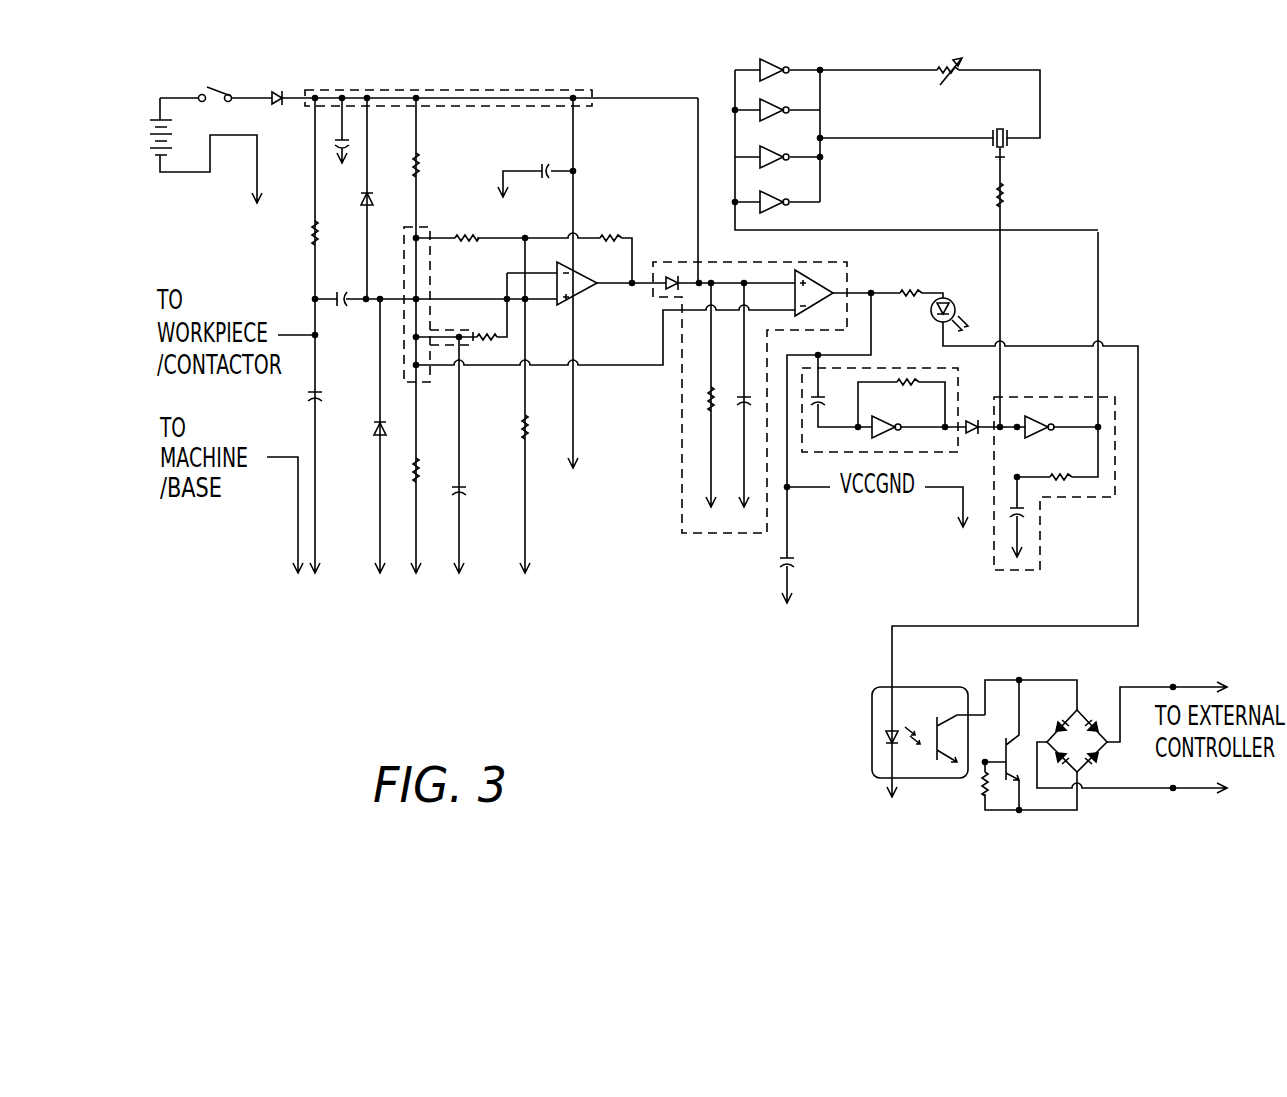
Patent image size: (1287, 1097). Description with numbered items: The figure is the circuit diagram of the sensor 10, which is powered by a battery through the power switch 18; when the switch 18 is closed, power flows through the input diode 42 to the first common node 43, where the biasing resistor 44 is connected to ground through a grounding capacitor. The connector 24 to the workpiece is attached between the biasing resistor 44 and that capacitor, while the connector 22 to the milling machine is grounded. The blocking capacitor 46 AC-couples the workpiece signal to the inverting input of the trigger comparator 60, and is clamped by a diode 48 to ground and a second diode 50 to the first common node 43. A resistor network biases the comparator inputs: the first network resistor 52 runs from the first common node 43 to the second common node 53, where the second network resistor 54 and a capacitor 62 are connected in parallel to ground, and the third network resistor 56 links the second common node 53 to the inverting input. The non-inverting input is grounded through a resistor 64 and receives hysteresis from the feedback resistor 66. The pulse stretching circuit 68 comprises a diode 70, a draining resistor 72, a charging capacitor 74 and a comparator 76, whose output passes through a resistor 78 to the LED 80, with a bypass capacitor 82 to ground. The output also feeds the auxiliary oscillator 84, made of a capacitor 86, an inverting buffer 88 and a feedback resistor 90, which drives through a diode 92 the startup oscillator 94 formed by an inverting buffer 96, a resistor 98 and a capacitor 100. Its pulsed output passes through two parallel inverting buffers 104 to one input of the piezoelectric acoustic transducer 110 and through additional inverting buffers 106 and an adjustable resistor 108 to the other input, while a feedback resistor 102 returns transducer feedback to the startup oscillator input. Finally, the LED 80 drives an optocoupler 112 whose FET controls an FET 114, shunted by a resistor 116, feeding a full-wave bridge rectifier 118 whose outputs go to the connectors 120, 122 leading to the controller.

The sensor 10 is at (450, 615).
The power switch 18 is at (214, 82).
The connector 22 is at (282, 462).
The connector 24 is at (305, 334).
The input diode 42 is at (291, 84).
The first common node 43 is at (440, 90).
The biasing resistor 44 is at (309, 232).
The blocking capacitor 46 is at (341, 306).
The diode 48 is at (378, 437).
The second diode 50 is at (371, 198).
The first network resistor 52 is at (418, 172).
The second common node 53 is at (423, 230).
The second network resistor 54 is at (418, 468).
The third network resistor 56 is at (488, 348).
The trigger comparator 60 is at (583, 300).
The capacitor 62 is at (463, 488).
The resistor 64 is at (530, 435).
The feedback resistor 66 is at (598, 235).
The pulse stretching circuit 68 is at (682, 515).
The diode 70 is at (669, 276).
The draining resistor 72 is at (708, 400).
The charging capacitor 74 is at (745, 398).
The comparator 76 is at (826, 274).
The resistor 78 is at (926, 286).
The LED 80 is at (933, 313).
The bypass capacitor 82 is at (780, 570).
The auxiliary oscillator 84 is at (988, 375).
The capacitor 86 is at (826, 410).
The inverting buffer 88 is at (870, 432).
The resistor 90 is at (899, 384).
The diode 92 is at (976, 423).
The startup oscillator 94 is at (995, 572).
The inverting buffer 96 is at (1036, 435).
The resistor 98 is at (1063, 478).
The capacitor 100 is at (1018, 520).
The feedback resistor 102 is at (1004, 194).
The inverting buffers 104 is at (771, 160).
The additional inverting buffers 106 is at (757, 82).
The resistor 108 is at (952, 72).
The piezoelectric acoustic transducer 110 is at (1005, 122).
The optocoupler 112 is at (870, 690).
The FET 114 is at (1003, 738).
The resistor 116 is at (983, 788).
The full-wave bridge rectifier 118 is at (1080, 708).
The connector 120 is at (1195, 683).
The connector 122 is at (1195, 792).